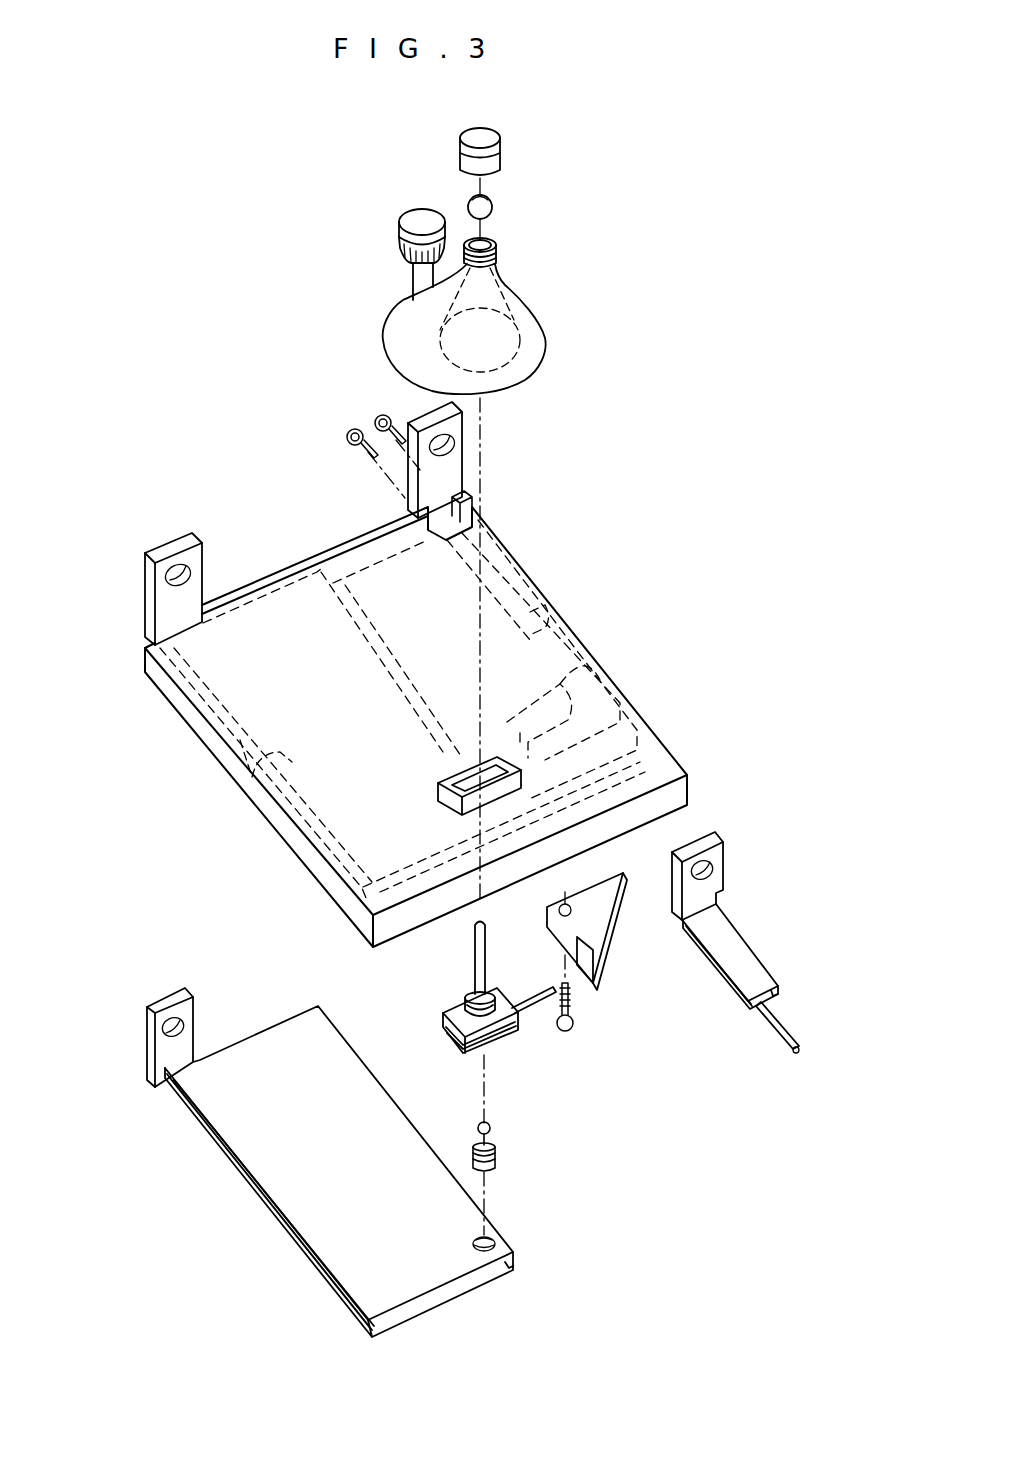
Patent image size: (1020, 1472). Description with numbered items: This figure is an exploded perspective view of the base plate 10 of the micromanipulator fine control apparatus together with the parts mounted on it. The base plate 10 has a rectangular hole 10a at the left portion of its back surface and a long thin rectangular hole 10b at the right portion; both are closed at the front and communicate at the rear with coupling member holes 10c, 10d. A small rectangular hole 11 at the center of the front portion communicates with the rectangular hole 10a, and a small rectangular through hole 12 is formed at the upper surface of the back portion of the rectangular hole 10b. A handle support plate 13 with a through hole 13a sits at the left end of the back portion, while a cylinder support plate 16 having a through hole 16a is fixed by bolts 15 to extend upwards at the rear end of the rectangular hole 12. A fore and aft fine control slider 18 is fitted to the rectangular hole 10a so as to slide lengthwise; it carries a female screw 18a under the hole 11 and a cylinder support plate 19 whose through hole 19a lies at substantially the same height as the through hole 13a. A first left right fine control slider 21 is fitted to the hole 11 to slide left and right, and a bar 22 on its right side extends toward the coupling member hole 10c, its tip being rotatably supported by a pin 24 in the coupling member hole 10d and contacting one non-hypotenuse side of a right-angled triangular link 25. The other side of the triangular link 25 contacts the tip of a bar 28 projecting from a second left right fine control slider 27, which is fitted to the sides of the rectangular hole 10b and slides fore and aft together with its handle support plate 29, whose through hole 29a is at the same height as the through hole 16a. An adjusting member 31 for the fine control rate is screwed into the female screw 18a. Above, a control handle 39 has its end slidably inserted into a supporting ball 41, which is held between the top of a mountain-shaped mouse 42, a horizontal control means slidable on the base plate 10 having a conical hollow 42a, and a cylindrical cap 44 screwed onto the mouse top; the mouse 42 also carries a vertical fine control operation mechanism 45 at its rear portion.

The base plate 10 is at (305, 525).
The rectangular hole 10a is at (262, 772).
The long thin rectangular hole 10b is at (556, 632).
The coupling member hole 10c is at (632, 702).
The coupling member hole 10d is at (612, 678).
The small rectangular hole 11 is at (442, 800).
The small rectangular through hole 12 is at (478, 500).
The handle support plate 13 is at (172, 548).
The through hole 13a is at (178, 585).
The bolts 15 is at (380, 414).
The cylinder support plate 16 is at (458, 425).
The through hole 16a is at (452, 452).
The fore and aft fine control slider 18 is at (282, 1197).
The female screw 18a is at (494, 1237).
The cylinder support plate 19 is at (165, 1000).
The through hole 19a is at (172, 1035).
The first left right fine control slider 21 is at (488, 1045).
The bar 22 is at (537, 1005).
The pin 24 is at (574, 1024).
The right-angled triangular link 25 is at (598, 935).
The second left right fine control slider 27 is at (748, 958).
The bar 28 is at (785, 1022).
The handle support plate 29 is at (718, 840).
The through hole 29a is at (708, 870).
The adjusting member 31 is at (498, 1165).
The control handle 39 is at (472, 966).
The supporting ball 41 is at (492, 206).
The mouse 42 is at (525, 295).
The conical hollow 42a is at (530, 325).
The cylindrical cap 44 is at (501, 152).
The vertical fine control operation mechanism 45 is at (395, 212).